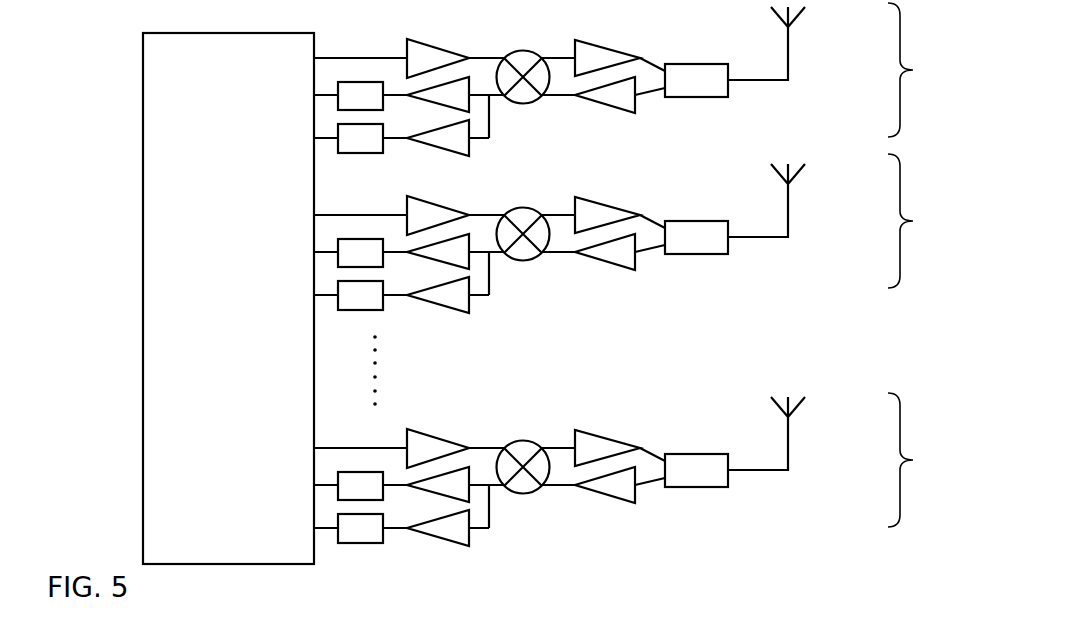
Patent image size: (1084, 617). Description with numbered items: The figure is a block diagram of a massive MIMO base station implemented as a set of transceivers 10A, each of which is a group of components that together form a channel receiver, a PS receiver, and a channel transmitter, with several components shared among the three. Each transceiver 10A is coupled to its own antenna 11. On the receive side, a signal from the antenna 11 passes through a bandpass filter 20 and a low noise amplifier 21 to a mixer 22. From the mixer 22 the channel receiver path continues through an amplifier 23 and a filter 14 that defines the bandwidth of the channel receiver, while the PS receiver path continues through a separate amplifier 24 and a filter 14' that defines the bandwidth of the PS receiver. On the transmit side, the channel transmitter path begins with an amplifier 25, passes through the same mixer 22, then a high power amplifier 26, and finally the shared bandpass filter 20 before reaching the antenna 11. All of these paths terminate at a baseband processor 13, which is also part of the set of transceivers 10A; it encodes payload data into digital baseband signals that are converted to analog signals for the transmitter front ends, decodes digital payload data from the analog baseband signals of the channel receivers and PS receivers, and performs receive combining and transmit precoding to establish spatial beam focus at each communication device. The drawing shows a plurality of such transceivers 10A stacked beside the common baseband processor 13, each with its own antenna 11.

The transceiver 10A is at (926, 265).
The antenna 11 is at (788, 57).
The baseband processor 13 is at (143, 207).
The filter 14 is at (360, 96).
The filter 14' is at (360, 138).
The bandpass filter 20 is at (696, 80).
The low noise amplifier 21 is at (605, 105).
The mixer 22 is at (530, 50).
The amplifier 23 is at (445, 108).
The amplifier 24 is at (470, 151).
The amplifier 25 is at (430, 46).
The high power amplifier 26 is at (596, 45).